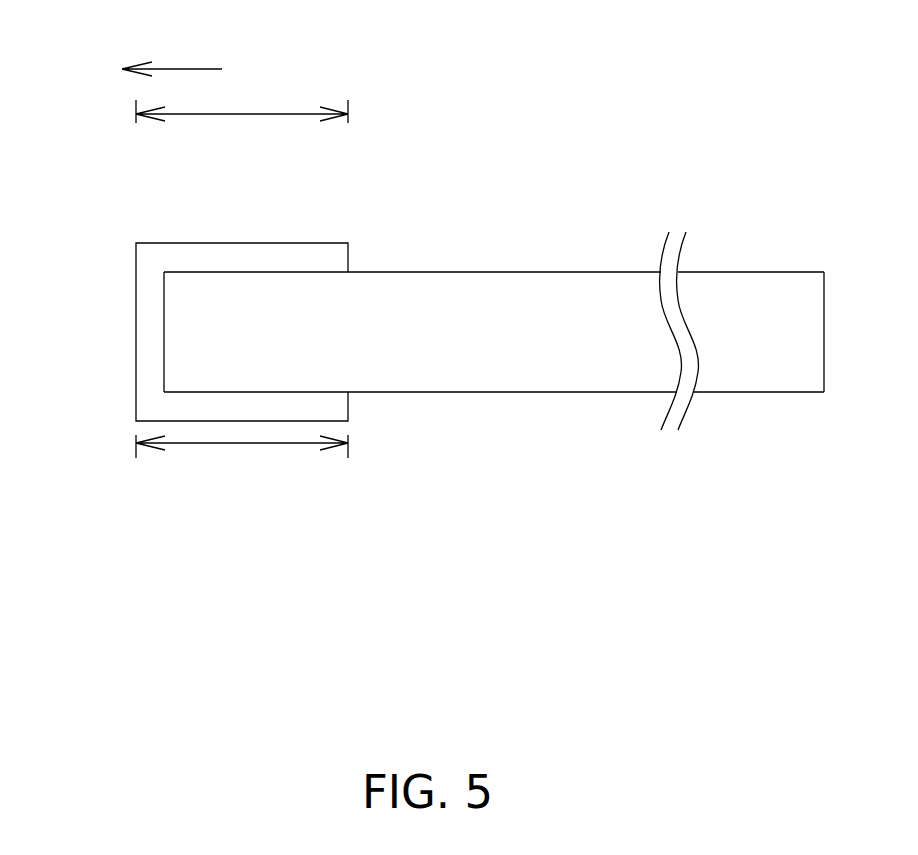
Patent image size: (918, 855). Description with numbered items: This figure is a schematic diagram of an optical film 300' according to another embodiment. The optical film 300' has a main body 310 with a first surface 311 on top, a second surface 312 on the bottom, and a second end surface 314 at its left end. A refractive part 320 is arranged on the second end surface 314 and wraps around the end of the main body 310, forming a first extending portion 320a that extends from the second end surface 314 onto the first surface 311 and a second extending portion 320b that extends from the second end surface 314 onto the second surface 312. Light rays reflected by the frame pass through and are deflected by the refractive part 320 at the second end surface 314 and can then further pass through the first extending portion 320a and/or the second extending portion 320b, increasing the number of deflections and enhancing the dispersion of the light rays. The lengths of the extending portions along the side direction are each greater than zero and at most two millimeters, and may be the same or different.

The optical film 300' is at (422, 274).
The main body 310 is at (430, 395).
The first surface 311 is at (534, 271).
The second surface 312 is at (535, 393).
The second end surface 314 is at (164, 332).
The refractive part 320 is at (147, 323).
The first extending portion 320a is at (338, 260).
The second extending portion 320b is at (338, 403).